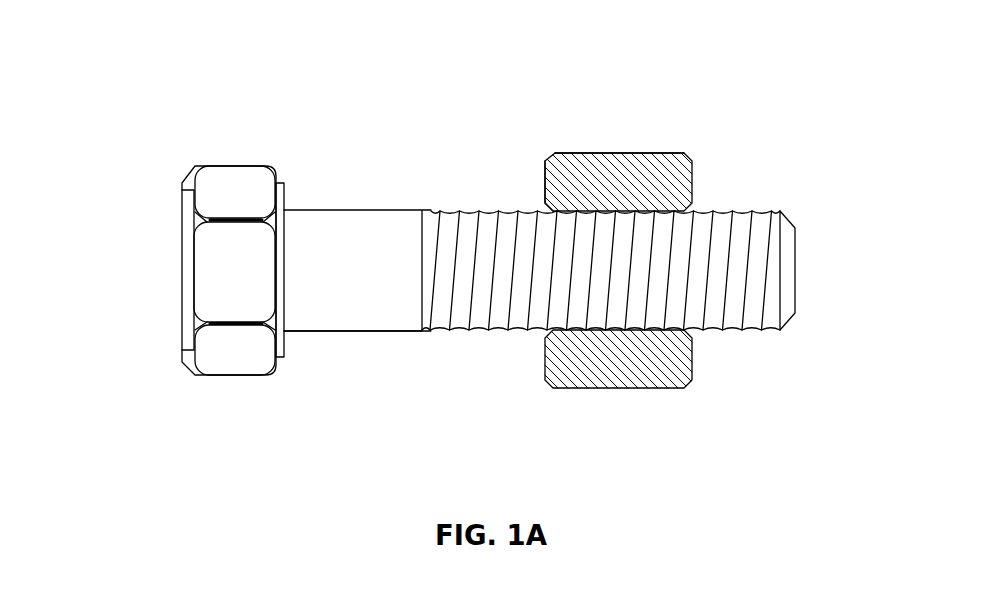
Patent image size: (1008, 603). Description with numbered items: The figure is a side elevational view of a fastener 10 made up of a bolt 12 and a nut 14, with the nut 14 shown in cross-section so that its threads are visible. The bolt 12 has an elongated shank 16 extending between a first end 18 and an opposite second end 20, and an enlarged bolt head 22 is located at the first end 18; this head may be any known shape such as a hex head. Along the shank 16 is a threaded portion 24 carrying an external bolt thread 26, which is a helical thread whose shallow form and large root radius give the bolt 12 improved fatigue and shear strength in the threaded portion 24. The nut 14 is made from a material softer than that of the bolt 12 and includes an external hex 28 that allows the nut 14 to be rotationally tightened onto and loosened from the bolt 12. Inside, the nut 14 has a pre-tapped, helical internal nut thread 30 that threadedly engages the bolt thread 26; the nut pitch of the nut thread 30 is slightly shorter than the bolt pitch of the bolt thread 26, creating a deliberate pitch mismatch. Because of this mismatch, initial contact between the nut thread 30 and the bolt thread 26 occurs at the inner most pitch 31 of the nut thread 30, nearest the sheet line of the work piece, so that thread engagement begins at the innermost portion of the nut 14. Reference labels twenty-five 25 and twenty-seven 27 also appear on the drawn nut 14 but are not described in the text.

The fastener 10 is at (104, 34).
The bolt 12 is at (322, 228).
The nut 14 is at (659, 394).
The elongated shank 16 is at (348, 305).
The first end 18 is at (275, 205).
The second end 20 is at (795, 250).
The bolt head 22 is at (218, 178).
The threaded portion 24 is at (723, 211).
The nut chamfer 25 is at (545, 195).
The external bolt thread 26 is at (738, 277).
The nut side face 27 is at (584, 135).
The external hex 28 is at (557, 152).
The internal nut thread 30 is at (618, 328).
The inner most pitch 31 is at (572, 177).